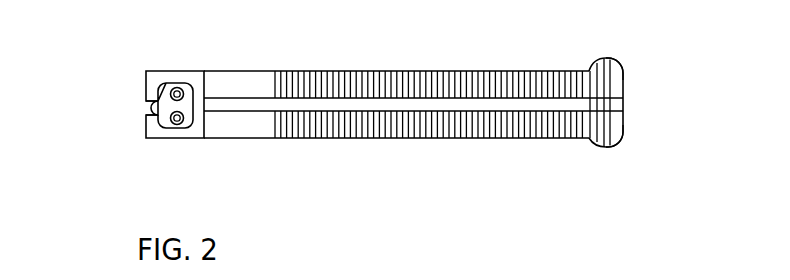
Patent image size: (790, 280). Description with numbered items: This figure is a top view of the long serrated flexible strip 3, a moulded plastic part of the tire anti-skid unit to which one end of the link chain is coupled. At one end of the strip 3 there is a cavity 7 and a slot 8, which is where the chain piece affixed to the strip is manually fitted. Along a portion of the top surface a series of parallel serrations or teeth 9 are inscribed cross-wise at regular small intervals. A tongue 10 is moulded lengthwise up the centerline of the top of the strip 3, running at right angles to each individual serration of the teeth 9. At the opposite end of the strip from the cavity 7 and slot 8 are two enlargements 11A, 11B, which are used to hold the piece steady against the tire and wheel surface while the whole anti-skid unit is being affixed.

The long serrated flexible strip 3 is at (230, 70).
The cavity 7 is at (186, 122).
The slot 8 is at (157, 108).
The serrations or teeth 9 is at (500, 85).
The tongue 10 is at (295, 105).
The enlargement 11A is at (625, 63).
The enlargement 11B is at (618, 143).